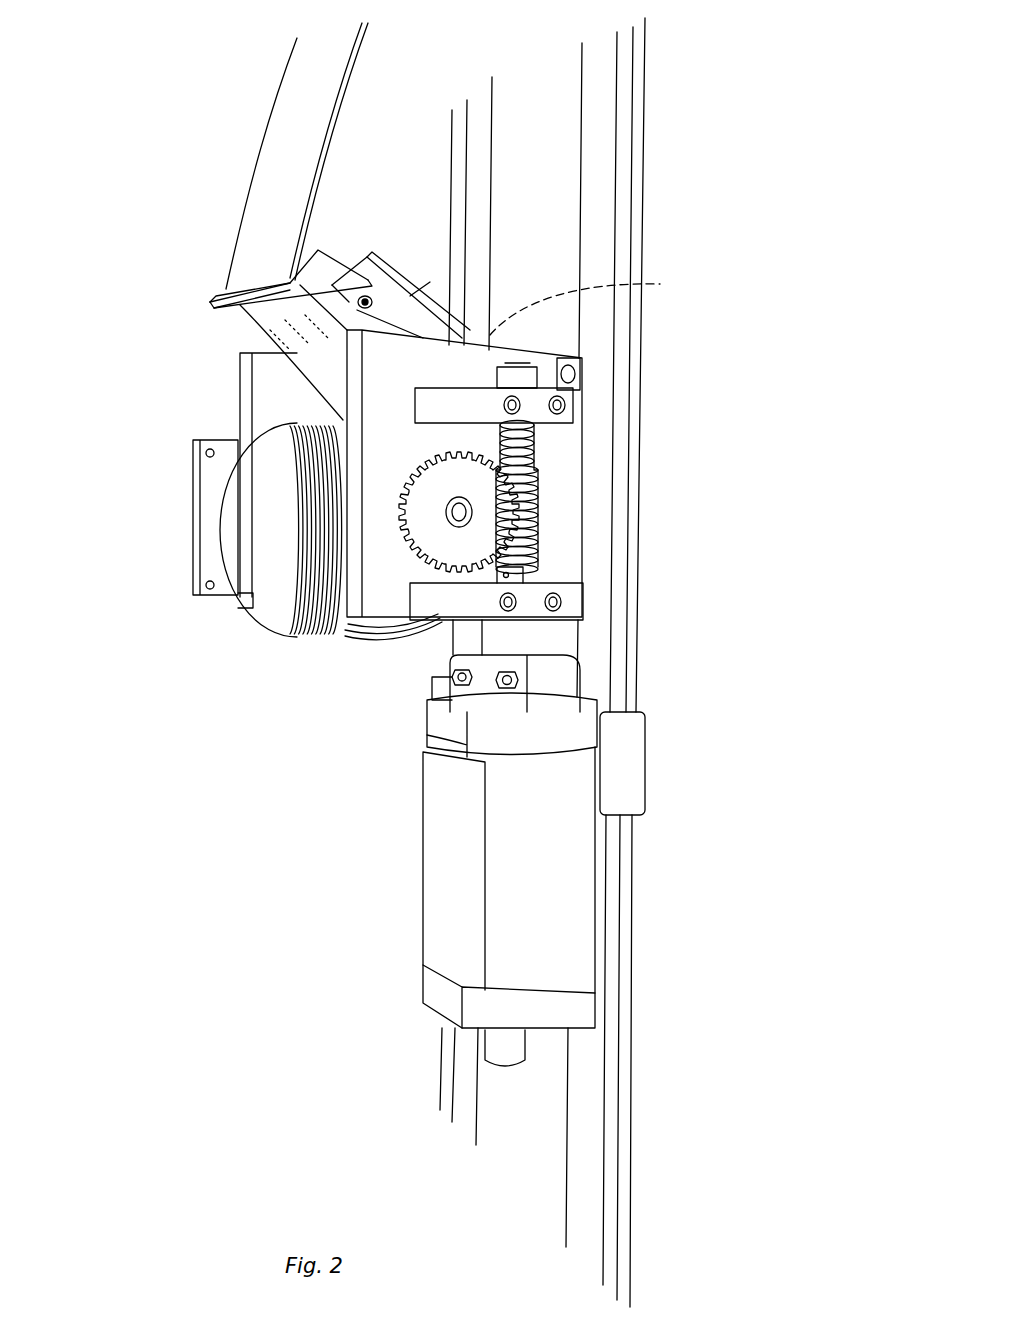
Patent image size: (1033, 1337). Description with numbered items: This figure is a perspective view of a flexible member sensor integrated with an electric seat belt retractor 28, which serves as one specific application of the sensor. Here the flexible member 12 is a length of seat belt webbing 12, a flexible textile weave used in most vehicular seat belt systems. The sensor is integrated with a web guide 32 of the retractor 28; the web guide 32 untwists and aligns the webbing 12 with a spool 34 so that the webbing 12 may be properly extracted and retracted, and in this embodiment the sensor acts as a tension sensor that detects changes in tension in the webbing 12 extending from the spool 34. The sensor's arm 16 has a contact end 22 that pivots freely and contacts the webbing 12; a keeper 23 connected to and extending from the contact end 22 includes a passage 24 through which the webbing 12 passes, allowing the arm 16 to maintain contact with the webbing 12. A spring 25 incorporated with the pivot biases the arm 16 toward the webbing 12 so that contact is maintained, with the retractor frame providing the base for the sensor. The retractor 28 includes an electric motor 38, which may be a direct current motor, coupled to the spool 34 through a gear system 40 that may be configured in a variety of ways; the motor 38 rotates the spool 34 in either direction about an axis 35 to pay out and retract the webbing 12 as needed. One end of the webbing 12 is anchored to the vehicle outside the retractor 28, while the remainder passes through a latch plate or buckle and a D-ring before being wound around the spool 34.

The flexible member 12 is at (285, 86).
The passage 24 is at (243, 272).
The contact end 22 is at (347, 262).
The keeper 23 is at (210, 300).
The arm 16 is at (412, 300).
The spring 25 is at (660, 284).
The electric seat belt retractor 28 is at (678, 215).
The web guide 32 is at (257, 330).
The gear system 40 is at (553, 515).
The spool 34 is at (307, 646).
The axis 35 is at (459, 520).
The electric motor 38 is at (510, 860).